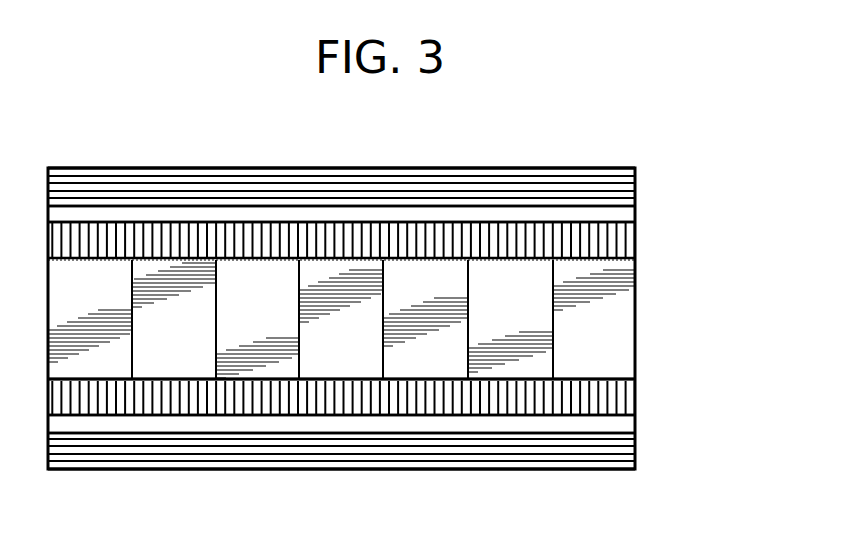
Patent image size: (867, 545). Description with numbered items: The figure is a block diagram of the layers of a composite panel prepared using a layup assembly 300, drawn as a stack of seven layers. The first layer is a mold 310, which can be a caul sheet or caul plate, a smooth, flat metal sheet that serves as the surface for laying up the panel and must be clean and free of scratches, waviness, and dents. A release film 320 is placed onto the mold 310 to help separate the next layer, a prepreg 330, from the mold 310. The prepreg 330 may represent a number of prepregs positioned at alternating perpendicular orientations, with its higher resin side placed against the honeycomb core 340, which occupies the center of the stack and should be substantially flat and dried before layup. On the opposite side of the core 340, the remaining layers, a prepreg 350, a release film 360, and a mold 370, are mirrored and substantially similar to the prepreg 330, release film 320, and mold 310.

The layup assembly 300 is at (342, 118).
The mold 310 is at (635, 169).
The release film 320 is at (635, 209).
The prepreg 330 is at (635, 239).
The honeycomb core 340 is at (635, 320).
The prepreg 350 is at (635, 383).
The release film 360 is at (635, 421).
The mold 370 is at (635, 456).